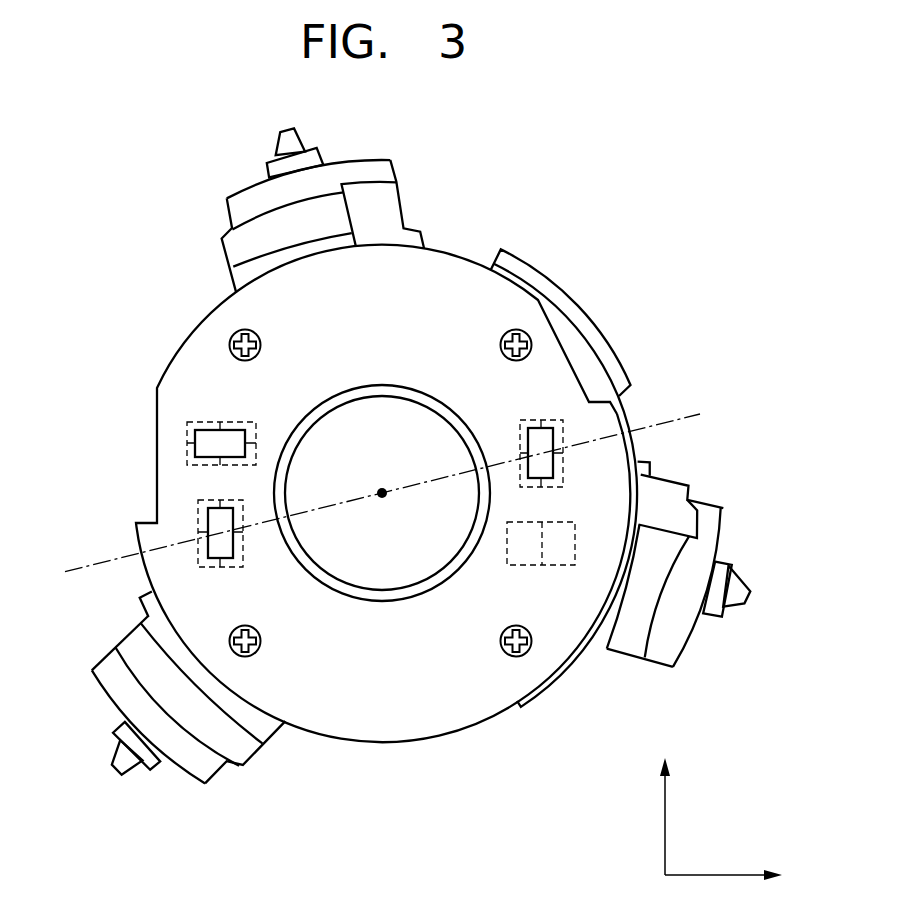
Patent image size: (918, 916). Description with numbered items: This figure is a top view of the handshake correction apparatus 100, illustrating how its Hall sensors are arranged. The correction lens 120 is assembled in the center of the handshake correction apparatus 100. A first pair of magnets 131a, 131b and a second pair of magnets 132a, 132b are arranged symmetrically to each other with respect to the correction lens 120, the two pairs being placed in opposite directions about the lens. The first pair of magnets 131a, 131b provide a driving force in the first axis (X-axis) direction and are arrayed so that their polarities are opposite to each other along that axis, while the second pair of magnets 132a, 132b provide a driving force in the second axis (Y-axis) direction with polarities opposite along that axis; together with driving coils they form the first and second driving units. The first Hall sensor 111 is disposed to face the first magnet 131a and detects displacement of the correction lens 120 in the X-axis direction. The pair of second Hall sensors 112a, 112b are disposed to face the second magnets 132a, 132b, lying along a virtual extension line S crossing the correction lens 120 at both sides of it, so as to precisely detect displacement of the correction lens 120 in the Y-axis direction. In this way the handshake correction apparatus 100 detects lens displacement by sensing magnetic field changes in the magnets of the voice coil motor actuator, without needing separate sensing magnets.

The handshake correction apparatus 100 is at (653, 208).
The first Hall sensor 111 is at (195, 437).
The second Hall sensor 112a is at (542, 440).
The second Hall sensor 112b is at (208, 524).
The correction lens 120 is at (407, 425).
The first magnet 131a is at (205, 422).
The first magnet 131b is at (558, 560).
The second magnet 132a is at (563, 432).
The second magnet 132b is at (198, 532).